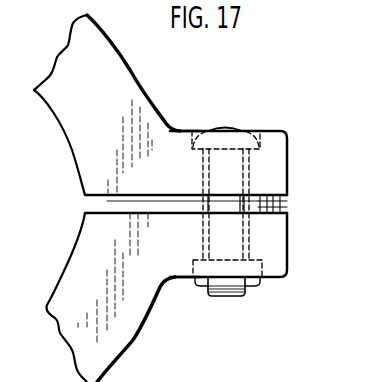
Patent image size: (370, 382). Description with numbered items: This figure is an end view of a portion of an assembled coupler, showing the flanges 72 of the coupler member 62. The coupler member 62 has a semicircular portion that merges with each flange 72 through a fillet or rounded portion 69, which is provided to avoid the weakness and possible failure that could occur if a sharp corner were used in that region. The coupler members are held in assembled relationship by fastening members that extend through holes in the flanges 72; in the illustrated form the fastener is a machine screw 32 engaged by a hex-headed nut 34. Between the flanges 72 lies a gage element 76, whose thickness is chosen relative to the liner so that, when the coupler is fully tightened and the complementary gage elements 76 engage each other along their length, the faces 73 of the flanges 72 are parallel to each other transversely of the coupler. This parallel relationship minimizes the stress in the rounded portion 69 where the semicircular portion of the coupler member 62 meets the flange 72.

The coupler member 62 is at (133, 346).
The rounded portion 69 is at (170, 129).
The flange 72 is at (286, 176).
The face 73 is at (107, 203).
The gage element 76 is at (288, 206).
The machine screw 32 is at (228, 129).
The hex-headed nut 34 is at (257, 288).